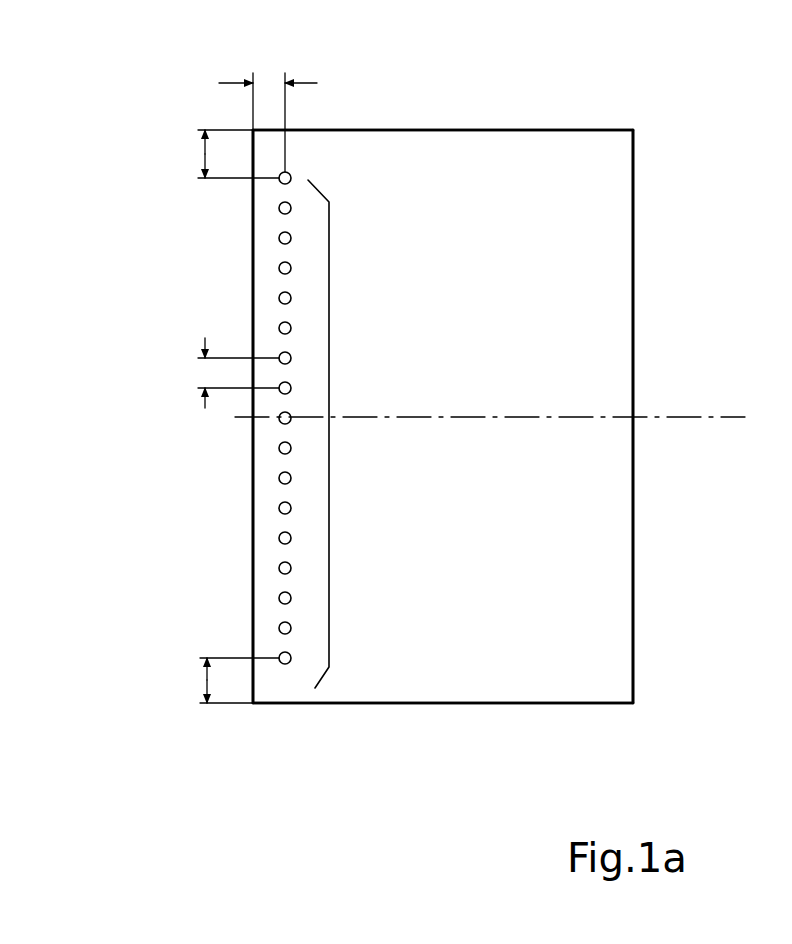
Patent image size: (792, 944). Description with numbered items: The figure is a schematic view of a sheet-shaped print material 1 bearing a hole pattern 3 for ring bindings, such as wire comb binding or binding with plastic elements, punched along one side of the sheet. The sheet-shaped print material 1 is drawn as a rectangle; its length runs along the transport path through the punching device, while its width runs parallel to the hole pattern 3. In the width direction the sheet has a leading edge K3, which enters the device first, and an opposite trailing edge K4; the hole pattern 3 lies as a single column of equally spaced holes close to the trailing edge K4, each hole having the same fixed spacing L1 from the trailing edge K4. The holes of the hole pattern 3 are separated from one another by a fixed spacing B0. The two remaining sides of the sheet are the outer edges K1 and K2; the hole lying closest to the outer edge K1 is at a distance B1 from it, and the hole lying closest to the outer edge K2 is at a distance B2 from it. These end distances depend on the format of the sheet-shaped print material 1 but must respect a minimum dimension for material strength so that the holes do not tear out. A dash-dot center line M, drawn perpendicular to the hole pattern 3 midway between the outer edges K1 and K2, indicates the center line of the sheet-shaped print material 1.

The sheet-shaped print material 1 is at (580, 153).
The hole pattern 3 is at (329, 275).
The outer edge K1 is at (443, 130).
The outer edge K2 is at (430, 705).
The leading edge K3 is at (633, 247).
The trailing edge K4 is at (254, 522).
The center line M is at (660, 413).
The spacing of punched holes from trailing edge L1 is at (268, 81).
The distance of first punched hole from outer edge K1 B1 is at (205, 153).
The spacing of punched holes B0 is at (203, 371).
The distance of last punched hole from outer edge K2 B2 is at (202, 678).